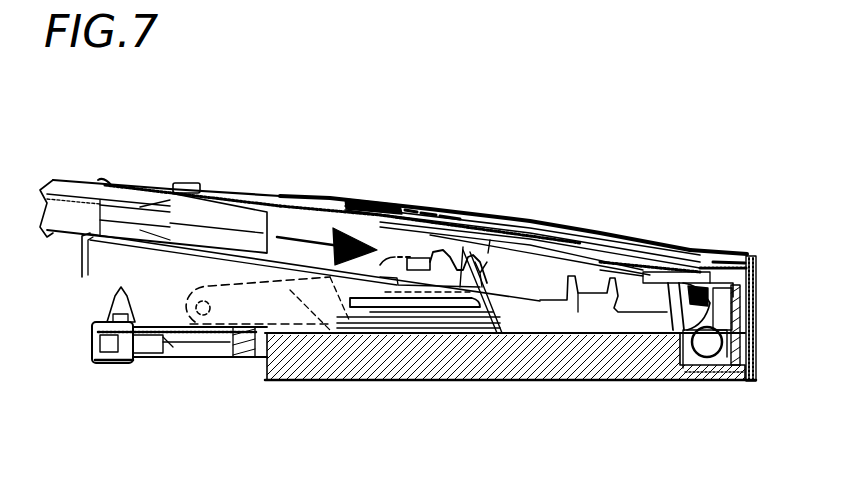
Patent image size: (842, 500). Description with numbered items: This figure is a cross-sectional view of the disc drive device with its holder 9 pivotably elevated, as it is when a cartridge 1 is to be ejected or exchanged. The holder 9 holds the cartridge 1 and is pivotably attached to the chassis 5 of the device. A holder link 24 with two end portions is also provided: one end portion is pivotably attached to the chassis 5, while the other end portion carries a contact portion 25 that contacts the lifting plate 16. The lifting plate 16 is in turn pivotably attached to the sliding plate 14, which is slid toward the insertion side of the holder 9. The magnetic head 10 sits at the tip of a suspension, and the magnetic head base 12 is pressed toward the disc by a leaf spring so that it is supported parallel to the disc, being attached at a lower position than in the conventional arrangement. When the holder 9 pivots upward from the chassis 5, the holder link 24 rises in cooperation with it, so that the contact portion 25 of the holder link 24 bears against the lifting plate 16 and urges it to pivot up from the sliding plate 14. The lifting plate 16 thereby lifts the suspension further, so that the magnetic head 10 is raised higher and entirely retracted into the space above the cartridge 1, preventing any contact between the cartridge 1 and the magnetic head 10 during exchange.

The cartridge 1 is at (70, 190).
The chassis 5 is at (92, 343).
The holder 9 is at (140, 187).
The magnetic head 10 is at (413, 207).
The magnetic head base 12 is at (400, 169).
The sliding plate 14 is at (230, 195).
The lifting plate 16 is at (507, 223).
The holder link 24 is at (320, 380).
The contact portion 25 is at (522, 383).